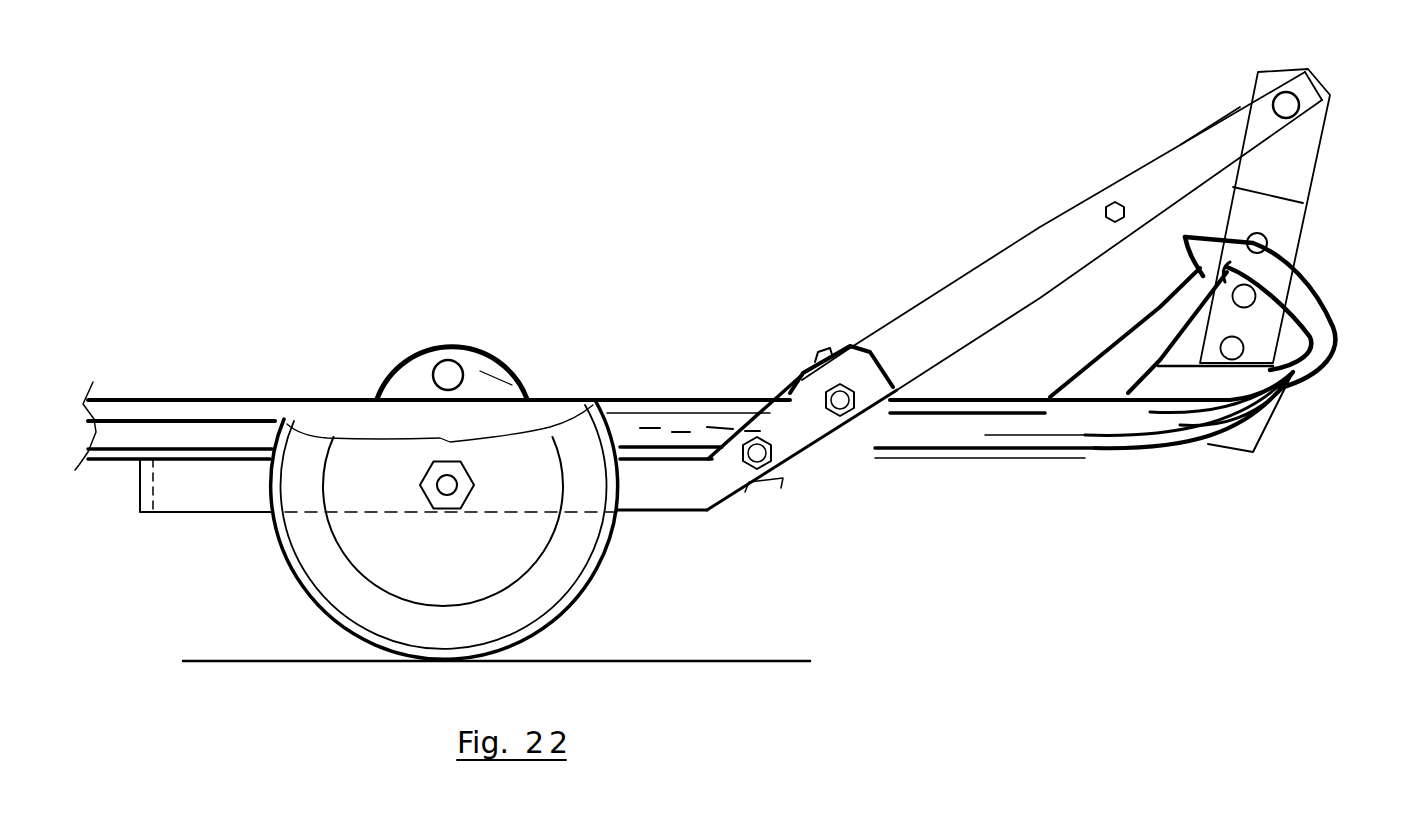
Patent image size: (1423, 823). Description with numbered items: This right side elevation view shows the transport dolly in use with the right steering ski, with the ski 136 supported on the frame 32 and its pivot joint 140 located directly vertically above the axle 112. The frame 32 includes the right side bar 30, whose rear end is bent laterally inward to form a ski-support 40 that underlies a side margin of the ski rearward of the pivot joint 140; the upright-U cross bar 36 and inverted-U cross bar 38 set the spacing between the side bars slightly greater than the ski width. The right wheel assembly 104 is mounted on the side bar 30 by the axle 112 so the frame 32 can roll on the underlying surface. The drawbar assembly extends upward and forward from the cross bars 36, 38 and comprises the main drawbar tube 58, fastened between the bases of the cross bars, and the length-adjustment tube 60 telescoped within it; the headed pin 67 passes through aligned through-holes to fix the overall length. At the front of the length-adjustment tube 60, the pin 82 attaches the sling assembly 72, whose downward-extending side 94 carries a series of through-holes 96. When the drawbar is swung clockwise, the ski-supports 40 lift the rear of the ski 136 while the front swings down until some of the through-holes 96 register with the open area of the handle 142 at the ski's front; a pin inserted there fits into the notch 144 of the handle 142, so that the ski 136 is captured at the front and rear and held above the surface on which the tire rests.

The right side bar 30 is at (195, 513).
The frame 32 is at (709, 516).
The upright-U cross bar 36 is at (845, 355).
The inverted-U cross bar 38 is at (795, 465).
The ski-support 40 is at (138, 487).
The main drawbar tube 58 is at (1118, 178).
The length-adjustment tube 60 is at (1213, 122).
The headed pin 67 is at (1105, 212).
The sling assembly 72 is at (1325, 137).
The pin 82 is at (1298, 96).
The side 94 is at (1260, 430).
The through-holes 96 is at (1244, 345).
The right wheel assembly 104 is at (587, 587).
The axle 112 is at (449, 484).
The ski 136 is at (705, 393).
The pivot joint 140 is at (473, 346).
The handle 142 is at (1313, 310).
The notch 144 is at (1200, 307).